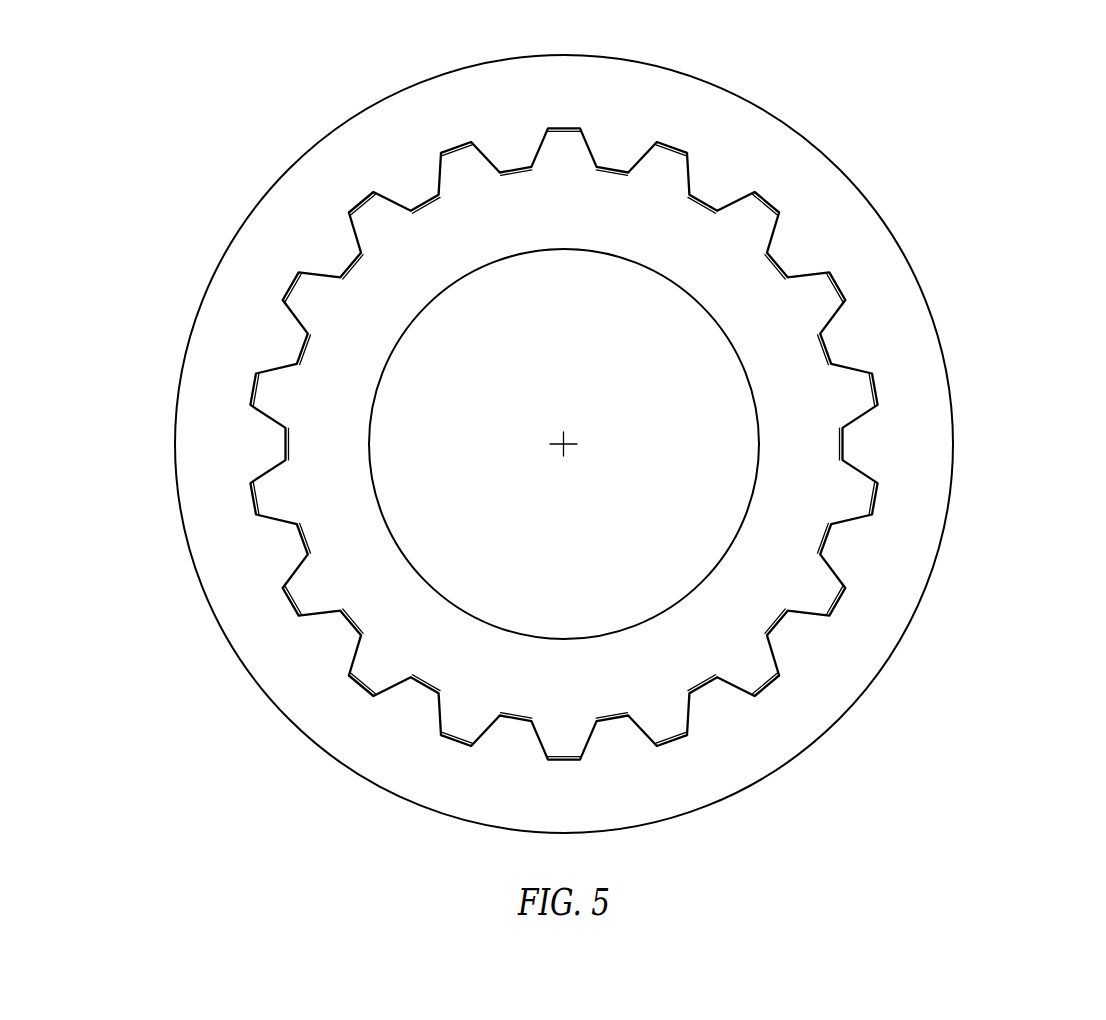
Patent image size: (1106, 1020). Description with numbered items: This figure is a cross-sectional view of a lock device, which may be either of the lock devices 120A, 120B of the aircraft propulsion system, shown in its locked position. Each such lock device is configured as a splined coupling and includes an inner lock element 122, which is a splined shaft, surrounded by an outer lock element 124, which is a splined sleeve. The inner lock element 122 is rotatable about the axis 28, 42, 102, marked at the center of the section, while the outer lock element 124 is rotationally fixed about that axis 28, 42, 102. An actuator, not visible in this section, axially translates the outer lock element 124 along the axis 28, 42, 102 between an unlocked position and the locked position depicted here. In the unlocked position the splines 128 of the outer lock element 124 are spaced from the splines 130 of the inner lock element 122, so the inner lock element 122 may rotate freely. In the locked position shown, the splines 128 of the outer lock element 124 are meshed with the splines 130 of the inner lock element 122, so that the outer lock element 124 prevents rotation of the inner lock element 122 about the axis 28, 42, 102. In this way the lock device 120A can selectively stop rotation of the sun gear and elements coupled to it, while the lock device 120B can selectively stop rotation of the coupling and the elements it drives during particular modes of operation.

The lock device 120A is at (620, 430).
The lock device 120B is at (620, 430).
The outer lock element 124 is at (908, 259).
The inner lock element 122 is at (733, 350).
The splines 130 is at (833, 273).
The splines 128 is at (773, 270).
The axis 28 is at (575, 482).
The axis 42 is at (575, 482).
The axis 102 is at (565, 447).